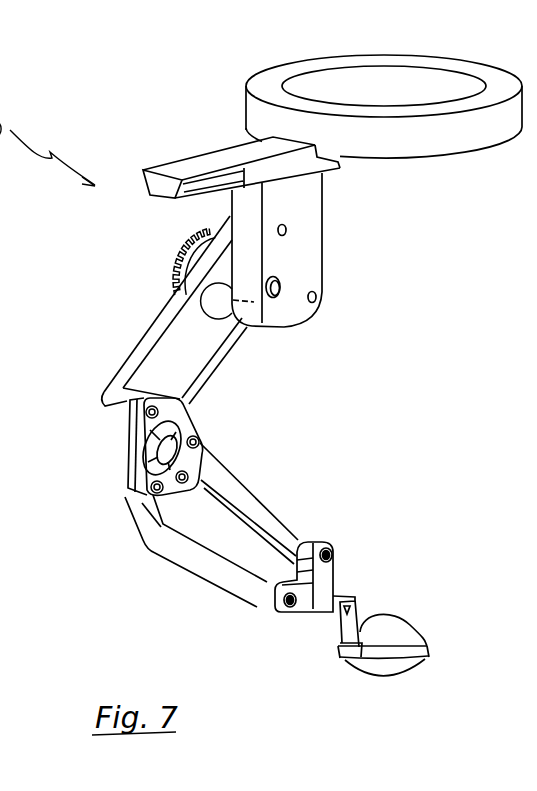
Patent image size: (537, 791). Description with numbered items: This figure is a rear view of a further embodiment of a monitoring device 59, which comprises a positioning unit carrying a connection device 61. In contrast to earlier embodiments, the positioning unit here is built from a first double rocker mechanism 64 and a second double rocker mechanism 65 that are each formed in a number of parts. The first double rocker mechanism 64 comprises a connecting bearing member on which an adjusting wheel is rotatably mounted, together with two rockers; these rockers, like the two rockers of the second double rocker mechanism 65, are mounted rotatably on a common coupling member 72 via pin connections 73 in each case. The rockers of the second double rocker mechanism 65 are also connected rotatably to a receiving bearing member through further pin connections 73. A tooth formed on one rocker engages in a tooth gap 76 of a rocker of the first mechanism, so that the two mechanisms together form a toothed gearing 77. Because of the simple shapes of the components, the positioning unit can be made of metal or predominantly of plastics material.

The monitoring device 59 is at (122, 100).
The connection device 61 is at (188, 153).
The first double rocker mechanism 64 is at (0, 212).
The tooth gap 76 is at (116, 274).
The toothed gearing 77 is at (0, 316).
The coupling member 72 is at (101, 411).
The pin connections 73 is at (147, 413).
The second double rocker mechanism 65 is at (0, 486).